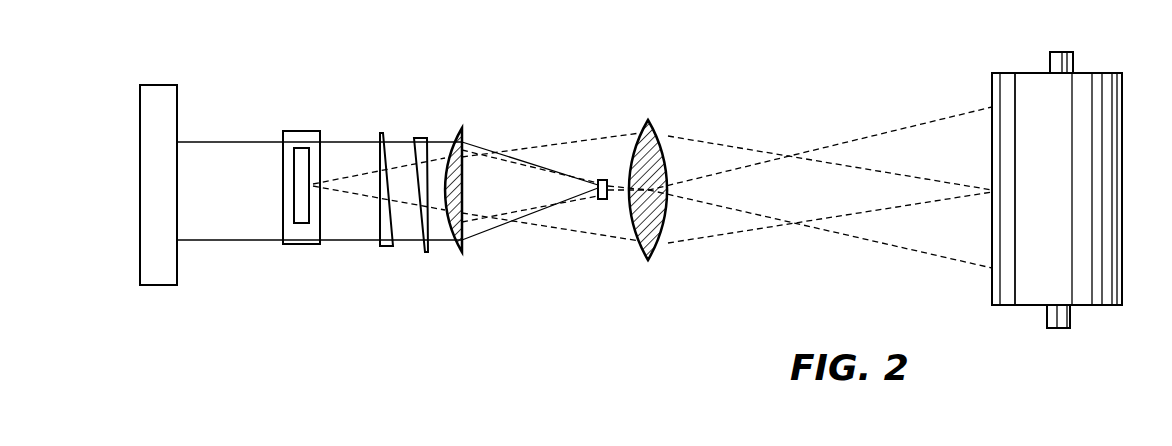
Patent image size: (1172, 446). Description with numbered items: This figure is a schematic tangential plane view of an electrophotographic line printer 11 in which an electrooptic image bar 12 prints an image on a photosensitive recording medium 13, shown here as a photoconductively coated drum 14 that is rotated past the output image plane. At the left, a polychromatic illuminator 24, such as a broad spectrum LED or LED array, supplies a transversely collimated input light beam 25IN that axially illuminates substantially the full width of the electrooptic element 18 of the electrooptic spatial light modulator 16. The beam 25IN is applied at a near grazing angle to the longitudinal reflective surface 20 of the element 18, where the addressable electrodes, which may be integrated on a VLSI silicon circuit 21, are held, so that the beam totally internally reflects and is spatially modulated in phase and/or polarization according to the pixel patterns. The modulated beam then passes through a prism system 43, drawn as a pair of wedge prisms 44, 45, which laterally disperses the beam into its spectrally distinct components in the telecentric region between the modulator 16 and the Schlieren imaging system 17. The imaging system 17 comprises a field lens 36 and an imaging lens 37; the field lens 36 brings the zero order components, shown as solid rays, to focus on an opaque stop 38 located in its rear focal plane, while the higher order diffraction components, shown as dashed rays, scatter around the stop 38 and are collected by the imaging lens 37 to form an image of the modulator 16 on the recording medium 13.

The electrophotographic line printer 11 is at (787, 142).
The electrooptic image bar 12 is at (683, 342).
The photosensitive recording medium 13 is at (1020, 223).
The photoconductively coated drum 14 is at (1034, 170).
The electrooptic spatial light modulator 16 is at (276, 181).
The Schlieren imaging system 17 is at (581, 179).
The electrooptic element 18 is at (298, 247).
The reflective surface 20 is at (283, 158).
The VLSI silicon circuit 21 is at (297, 185).
The polychromatic illuminator 24 is at (140, 137).
The input light beam 25IN is at (257, 210).
The field lens 36 is at (450, 243).
The imaging lens 37 is at (673, 181).
The opaque stop 38 is at (603, 208).
The prism system 43 is at (404, 176).
The first prism 44 is at (385, 247).
The second prism 45 is at (420, 140).